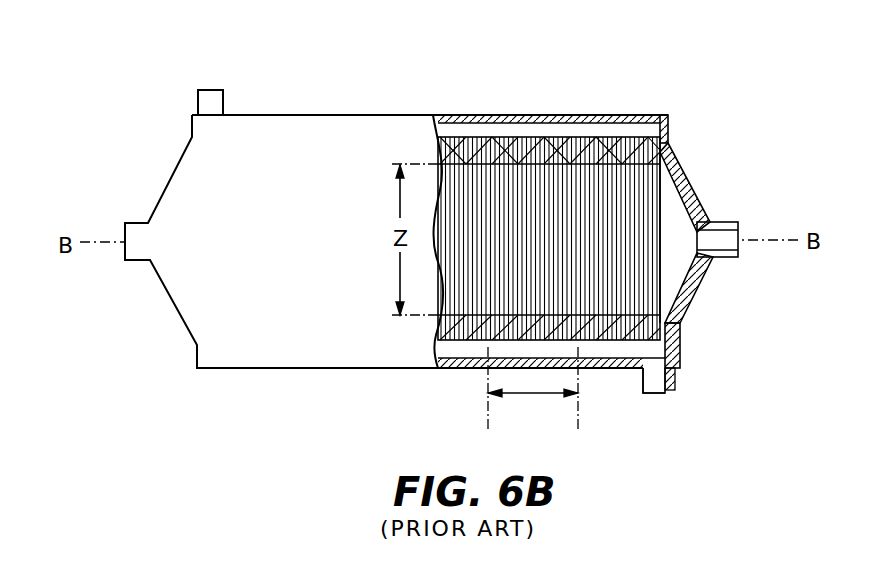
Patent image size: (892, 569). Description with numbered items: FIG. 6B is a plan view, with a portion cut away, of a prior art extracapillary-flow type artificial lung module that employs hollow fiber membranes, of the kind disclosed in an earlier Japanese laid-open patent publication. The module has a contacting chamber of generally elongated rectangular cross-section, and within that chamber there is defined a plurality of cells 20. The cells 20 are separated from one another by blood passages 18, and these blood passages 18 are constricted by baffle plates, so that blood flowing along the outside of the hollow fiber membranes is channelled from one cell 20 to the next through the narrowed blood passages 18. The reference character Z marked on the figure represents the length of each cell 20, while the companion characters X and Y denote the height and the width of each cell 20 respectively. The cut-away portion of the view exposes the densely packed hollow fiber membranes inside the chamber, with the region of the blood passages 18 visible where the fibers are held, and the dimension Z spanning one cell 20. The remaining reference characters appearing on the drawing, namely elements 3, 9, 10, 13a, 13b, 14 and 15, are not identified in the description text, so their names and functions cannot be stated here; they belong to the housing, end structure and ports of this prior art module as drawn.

The hollow fiber membranes 3 is at (493, 288).
The housing inlet port 9 is at (118, 212).
The housing outlet port 10 is at (209, 89).
The upper conical end cap wall 13a is at (672, 141).
The lower conical end cap wall 13b is at (684, 324).
The end port 14 is at (718, 232).
The end cap flange 15 is at (657, 395).
The blood passages 18 is at (578, 152).
The cells 20 is at (531, 400).